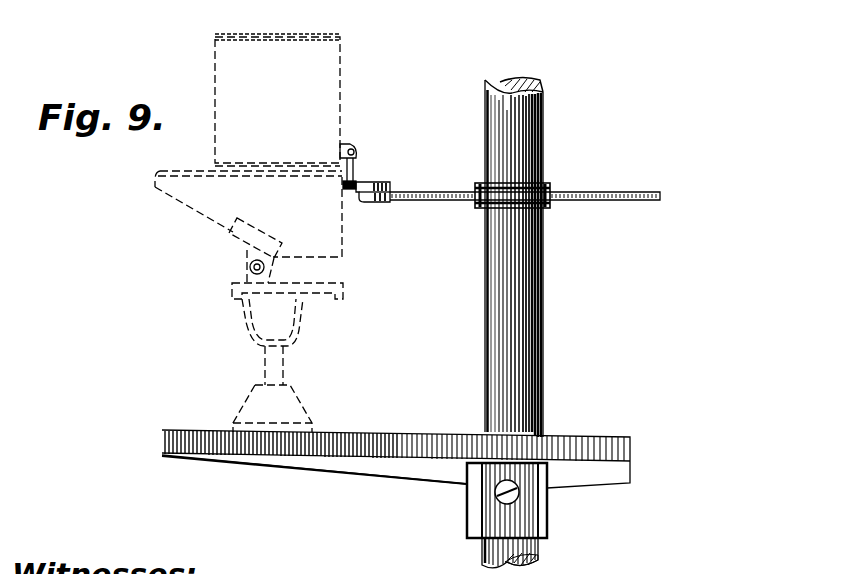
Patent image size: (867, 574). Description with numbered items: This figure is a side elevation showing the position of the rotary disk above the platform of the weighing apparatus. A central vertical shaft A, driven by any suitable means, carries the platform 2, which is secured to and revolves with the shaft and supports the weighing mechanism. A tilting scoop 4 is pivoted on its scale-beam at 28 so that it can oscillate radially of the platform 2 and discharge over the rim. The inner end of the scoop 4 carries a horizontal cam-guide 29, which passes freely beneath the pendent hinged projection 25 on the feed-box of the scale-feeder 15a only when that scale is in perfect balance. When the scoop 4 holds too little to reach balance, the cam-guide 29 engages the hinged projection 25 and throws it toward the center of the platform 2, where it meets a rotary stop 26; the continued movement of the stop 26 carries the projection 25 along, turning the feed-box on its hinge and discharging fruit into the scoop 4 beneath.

The scale-feeder 15a is at (341, 80).
The central vertical shaft A is at (485, 130).
The pendent hinged projection 25 is at (356, 165).
The cam-guide 29 is at (345, 186).
The rotary stop 26 is at (369, 203).
The tilting scoop 4 is at (196, 211).
The scoop pivot 28 is at (250, 267).
The platform 2 is at (391, 434).